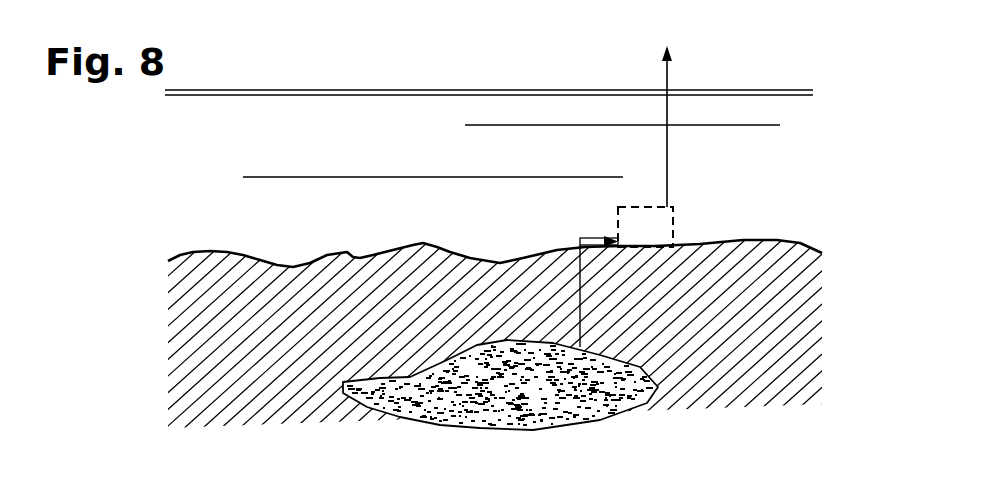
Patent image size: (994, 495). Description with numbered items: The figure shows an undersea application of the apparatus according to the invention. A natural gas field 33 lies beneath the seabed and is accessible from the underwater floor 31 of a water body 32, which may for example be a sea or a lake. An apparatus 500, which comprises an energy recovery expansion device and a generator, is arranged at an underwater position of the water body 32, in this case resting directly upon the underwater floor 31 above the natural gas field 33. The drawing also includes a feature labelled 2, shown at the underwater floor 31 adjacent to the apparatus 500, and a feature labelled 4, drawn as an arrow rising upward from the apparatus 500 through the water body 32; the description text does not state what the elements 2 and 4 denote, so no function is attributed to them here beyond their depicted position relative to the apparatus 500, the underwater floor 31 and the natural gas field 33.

The sensor / transmitter unit 2 is at (580, 238).
The signal transmission 4 is at (667, 72).
The underwater floor 31 is at (400, 247).
The water body 32 is at (421, 152).
The natural gas field 33 is at (385, 413).
The apparatus 500 is at (673, 207).